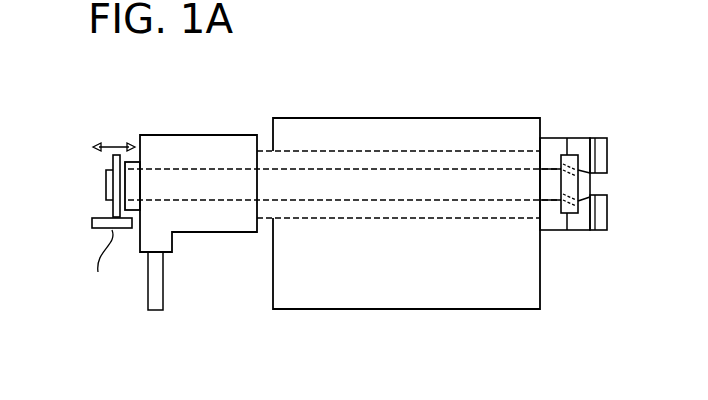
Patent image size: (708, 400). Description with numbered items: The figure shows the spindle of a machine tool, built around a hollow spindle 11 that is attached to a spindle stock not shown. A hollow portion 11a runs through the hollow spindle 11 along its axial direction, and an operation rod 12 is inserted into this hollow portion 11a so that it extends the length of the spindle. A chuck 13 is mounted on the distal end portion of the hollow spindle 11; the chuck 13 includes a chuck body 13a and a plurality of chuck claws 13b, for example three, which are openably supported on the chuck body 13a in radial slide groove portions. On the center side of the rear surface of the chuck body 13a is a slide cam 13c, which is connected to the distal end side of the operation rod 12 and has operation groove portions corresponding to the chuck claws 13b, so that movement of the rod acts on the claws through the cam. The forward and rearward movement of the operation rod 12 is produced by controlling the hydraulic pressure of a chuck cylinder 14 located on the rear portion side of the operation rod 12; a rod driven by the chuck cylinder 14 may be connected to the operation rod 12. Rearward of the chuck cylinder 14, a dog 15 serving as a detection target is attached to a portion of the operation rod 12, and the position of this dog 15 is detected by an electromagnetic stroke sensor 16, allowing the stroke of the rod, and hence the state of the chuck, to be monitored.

The hollow spindle 11 is at (437, 148).
The hollow portion 11a is at (390, 200).
The operation rod 12 is at (358, 168).
The chuck 13 is at (577, 232).
The chuck body 13a is at (580, 143).
The chuck claws 13b is at (597, 232).
The slide cam 13c is at (570, 153).
The chuck cylinder 14 is at (223, 233).
The dog 15 is at (110, 210).
The electromagnetic stroke sensor 16 is at (92, 227).